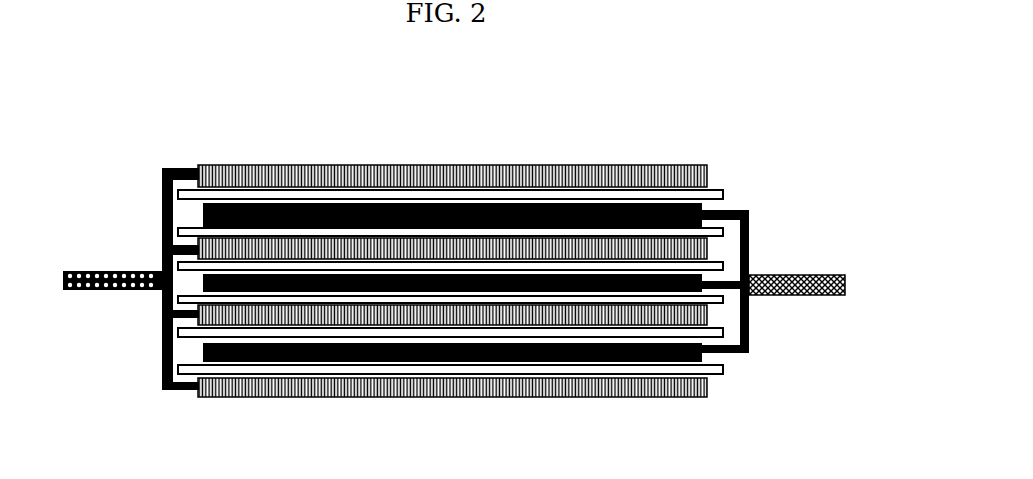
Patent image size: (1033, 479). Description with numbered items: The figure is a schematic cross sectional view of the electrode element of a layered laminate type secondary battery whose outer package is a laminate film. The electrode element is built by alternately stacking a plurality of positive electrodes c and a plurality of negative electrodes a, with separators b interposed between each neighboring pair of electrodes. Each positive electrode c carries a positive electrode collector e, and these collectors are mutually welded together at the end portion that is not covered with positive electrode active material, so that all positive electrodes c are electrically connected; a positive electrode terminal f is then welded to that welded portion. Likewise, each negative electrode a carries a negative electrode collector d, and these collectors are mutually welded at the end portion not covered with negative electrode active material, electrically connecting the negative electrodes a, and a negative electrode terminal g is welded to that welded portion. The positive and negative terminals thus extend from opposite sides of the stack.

The negative electrode a is at (310, 153).
The separator b is at (718, 182).
The positive electrode c is at (200, 365).
The negative electrode collector d is at (150, 330).
The positive electrode collector e is at (758, 342).
The positive electrode terminal f is at (787, 265).
The negative electrode terminal g is at (113, 265).